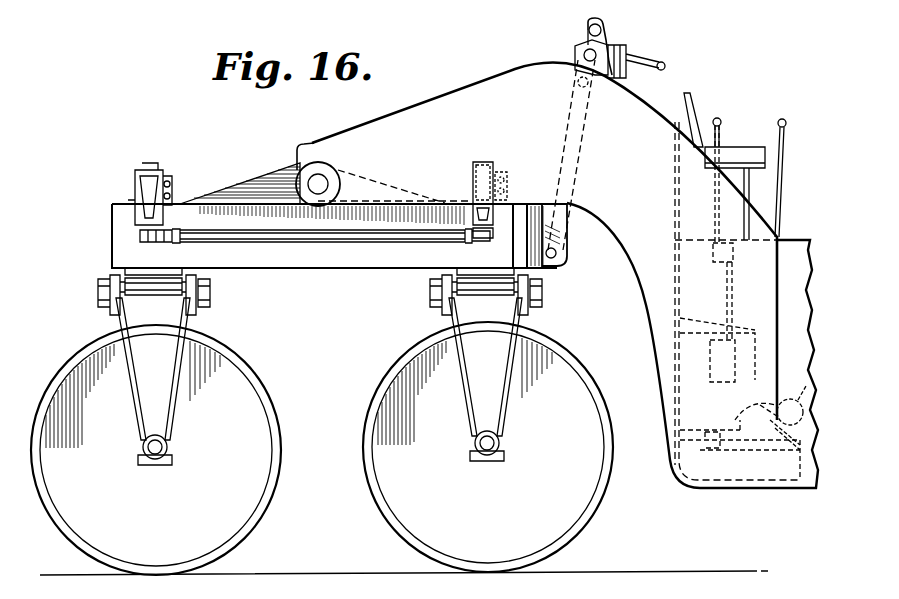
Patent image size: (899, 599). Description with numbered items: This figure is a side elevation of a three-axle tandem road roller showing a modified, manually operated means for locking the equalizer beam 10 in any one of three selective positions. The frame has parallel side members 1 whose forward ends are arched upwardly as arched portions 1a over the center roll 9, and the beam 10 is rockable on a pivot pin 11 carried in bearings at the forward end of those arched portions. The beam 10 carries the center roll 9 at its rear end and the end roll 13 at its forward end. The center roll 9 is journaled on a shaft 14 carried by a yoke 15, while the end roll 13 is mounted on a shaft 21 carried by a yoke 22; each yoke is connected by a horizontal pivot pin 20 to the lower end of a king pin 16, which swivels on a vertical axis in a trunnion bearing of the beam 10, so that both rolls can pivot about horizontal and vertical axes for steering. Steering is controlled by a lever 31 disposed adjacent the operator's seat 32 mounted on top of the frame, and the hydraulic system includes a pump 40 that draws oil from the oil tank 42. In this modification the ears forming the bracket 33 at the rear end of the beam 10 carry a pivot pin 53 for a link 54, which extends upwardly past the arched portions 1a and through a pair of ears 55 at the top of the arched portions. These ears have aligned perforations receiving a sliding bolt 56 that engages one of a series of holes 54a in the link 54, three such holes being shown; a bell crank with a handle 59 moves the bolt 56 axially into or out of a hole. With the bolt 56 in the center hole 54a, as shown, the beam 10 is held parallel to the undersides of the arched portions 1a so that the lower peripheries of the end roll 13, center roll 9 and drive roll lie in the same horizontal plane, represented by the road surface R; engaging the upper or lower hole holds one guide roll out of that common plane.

The side members 1 is at (793, 250).
The arched portions 1a is at (652, 106).
The center roll 9 is at (558, 352).
The equalizer beam 10 is at (242, 188).
The pivot pin 11 is at (322, 181).
The end roll 13 is at (225, 366).
The shaft 14 is at (475, 445).
The yoke 15 is at (460, 321).
The king pin 16 is at (318, 162).
The horizontal pivot pin 20 is at (98, 293).
The shaft 21 is at (145, 448).
The yoke 22 is at (135, 380).
The lever 31 is at (723, 123).
The operator's seat 32 is at (735, 147).
The bracket 33 is at (543, 263).
The pump 40 is at (806, 386).
The oil tank 42 is at (680, 369).
The pivot pin 53 is at (557, 253).
The link 54 is at (578, 165).
The holes 54a is at (604, 28).
The ears 55 is at (575, 50).
The sliding bolt 56 is at (588, 49).
The handle 59 is at (645, 58).
The road surface R is at (662, 570).